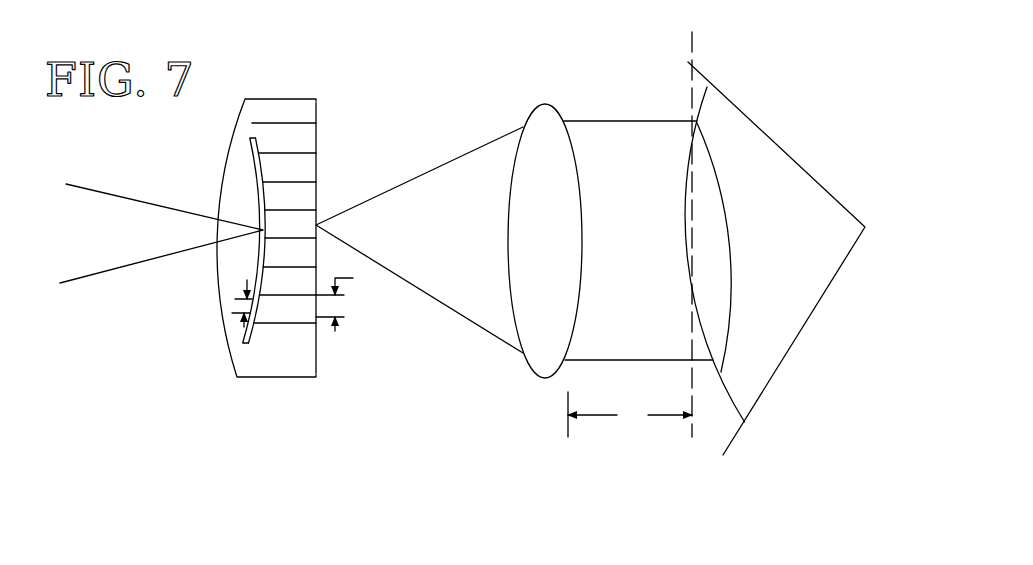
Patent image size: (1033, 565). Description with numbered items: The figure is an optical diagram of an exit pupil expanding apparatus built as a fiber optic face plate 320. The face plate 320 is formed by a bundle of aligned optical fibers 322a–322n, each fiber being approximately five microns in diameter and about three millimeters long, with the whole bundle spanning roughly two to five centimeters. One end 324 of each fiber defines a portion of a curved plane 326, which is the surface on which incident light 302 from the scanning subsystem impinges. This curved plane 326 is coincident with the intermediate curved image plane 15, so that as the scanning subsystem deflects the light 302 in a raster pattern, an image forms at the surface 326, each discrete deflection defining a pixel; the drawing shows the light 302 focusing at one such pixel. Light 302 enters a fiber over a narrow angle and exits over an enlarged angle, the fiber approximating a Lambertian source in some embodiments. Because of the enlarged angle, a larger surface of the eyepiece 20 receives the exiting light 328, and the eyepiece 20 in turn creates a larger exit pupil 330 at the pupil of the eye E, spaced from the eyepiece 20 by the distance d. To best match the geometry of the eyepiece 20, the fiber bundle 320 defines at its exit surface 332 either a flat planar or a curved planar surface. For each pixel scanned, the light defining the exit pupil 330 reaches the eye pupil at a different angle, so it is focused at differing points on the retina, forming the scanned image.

The fiber optic face plate 320 is at (299, 75).
The optical fiber 322a is at (307, 98).
The optical fiber 322n is at (310, 378).
The end of fiber 324 is at (316, 181).
The curved plane 326 is at (255, 194).
The intermediate curved image plane 15 is at (255, 253).
The light 302 is at (132, 240).
The light 328 is at (457, 236).
The exit surface 332 is at (335, 113).
The eyepiece 20 is at (556, 112).
The eye E is at (752, 120).
The exit pupil 330 is at (692, 240).
The eye relief distance d is at (630, 414).